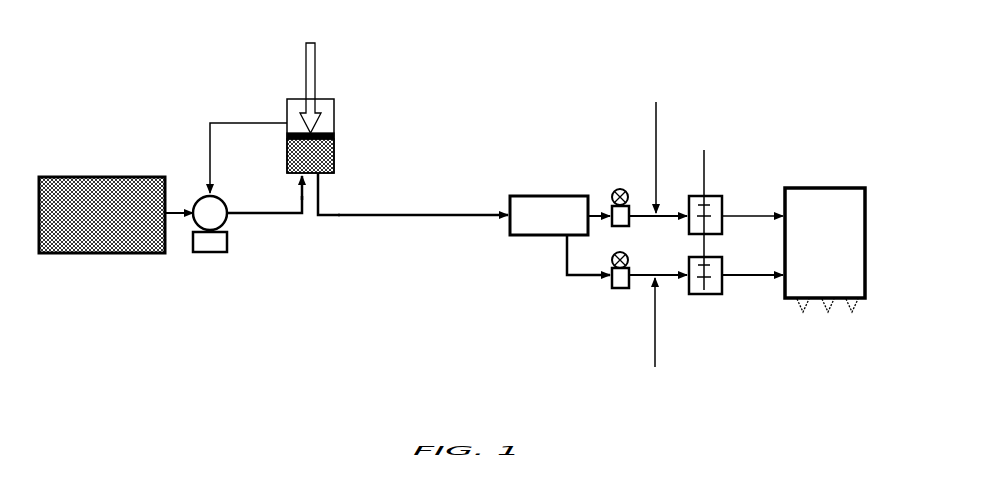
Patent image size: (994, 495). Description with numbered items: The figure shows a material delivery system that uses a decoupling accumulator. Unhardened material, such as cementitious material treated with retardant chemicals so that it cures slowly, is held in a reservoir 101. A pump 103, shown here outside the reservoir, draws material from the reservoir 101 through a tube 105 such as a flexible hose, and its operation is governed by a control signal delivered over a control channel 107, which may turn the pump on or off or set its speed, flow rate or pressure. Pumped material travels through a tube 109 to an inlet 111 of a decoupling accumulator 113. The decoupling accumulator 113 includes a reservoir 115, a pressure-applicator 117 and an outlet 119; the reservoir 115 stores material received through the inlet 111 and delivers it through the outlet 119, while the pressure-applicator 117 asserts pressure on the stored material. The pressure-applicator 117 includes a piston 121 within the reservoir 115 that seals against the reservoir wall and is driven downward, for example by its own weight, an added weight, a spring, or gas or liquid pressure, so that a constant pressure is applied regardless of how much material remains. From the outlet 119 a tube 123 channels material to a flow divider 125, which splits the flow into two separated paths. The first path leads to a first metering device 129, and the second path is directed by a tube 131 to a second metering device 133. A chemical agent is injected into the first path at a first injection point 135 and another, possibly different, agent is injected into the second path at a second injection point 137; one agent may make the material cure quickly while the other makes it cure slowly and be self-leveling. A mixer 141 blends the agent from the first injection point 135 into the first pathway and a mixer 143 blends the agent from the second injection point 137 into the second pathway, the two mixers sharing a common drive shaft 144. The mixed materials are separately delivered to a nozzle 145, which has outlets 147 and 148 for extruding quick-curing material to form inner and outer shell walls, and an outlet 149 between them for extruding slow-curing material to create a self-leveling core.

The reservoir 101 is at (88, 170).
The pump 103 is at (230, 246).
The tube 105 is at (178, 203).
The control channel 107 is at (250, 120).
The tube 109 is at (264, 220).
The inlet 111 is at (297, 196).
The decoupling accumulator 113 is at (337, 126).
The reservoir 115 is at (326, 156).
The pressure-applicator 117 is at (301, 43).
The outlet 119 is at (323, 194).
The piston 121 is at (324, 131).
The tube 123 is at (393, 206).
The flow divider 125 is at (540, 194).
The first metering device 129 is at (611, 190).
The tube 131 is at (563, 265).
The second metering device 133 is at (610, 297).
The first injection point 135 is at (653, 146).
The second injection point 137 is at (652, 335).
The mixer 141 is at (725, 194).
The mixer 143 is at (736, 280).
The common drive shaft 144 is at (707, 149).
The nozzle 145 is at (839, 187).
The outlet 147 is at (799, 319).
The outlet 148 is at (828, 319).
The outlet 149 is at (854, 319).